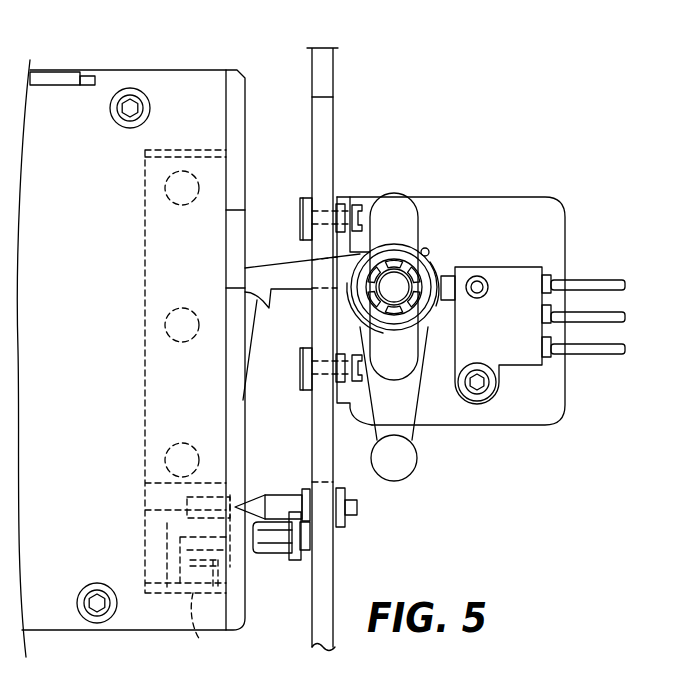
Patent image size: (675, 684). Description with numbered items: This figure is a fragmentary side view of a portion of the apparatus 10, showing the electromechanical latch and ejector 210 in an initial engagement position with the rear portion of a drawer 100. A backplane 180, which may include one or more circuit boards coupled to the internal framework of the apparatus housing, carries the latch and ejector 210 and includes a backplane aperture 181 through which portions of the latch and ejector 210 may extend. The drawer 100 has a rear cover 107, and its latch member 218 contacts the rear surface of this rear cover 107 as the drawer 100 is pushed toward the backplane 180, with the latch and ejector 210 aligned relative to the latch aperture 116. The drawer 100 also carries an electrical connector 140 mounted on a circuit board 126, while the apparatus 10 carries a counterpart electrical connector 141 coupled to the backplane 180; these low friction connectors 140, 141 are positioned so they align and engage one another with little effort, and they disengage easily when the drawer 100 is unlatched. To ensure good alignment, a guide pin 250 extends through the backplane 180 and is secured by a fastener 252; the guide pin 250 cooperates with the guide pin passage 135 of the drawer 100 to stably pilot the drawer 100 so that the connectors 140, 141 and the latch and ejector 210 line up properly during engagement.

The apparatus 10 is at (489, 260).
The drawer 100 is at (166, 52).
The rear cover 107 is at (250, 78).
The latch aperture 116 is at (237, 212).
The circuit board 126 is at (214, 633).
The guide pin passage 135 is at (232, 496).
The electrical connector 140 is at (165, 538).
The electrical connector 141 is at (272, 562).
The backplane 180 is at (327, 58).
The backplane aperture 181 is at (329, 98).
The electromechanical latch and ejector 210 is at (500, 168).
The latch member 218 is at (274, 252).
The guide pin 250 is at (288, 486).
The fastener 252 is at (352, 534).